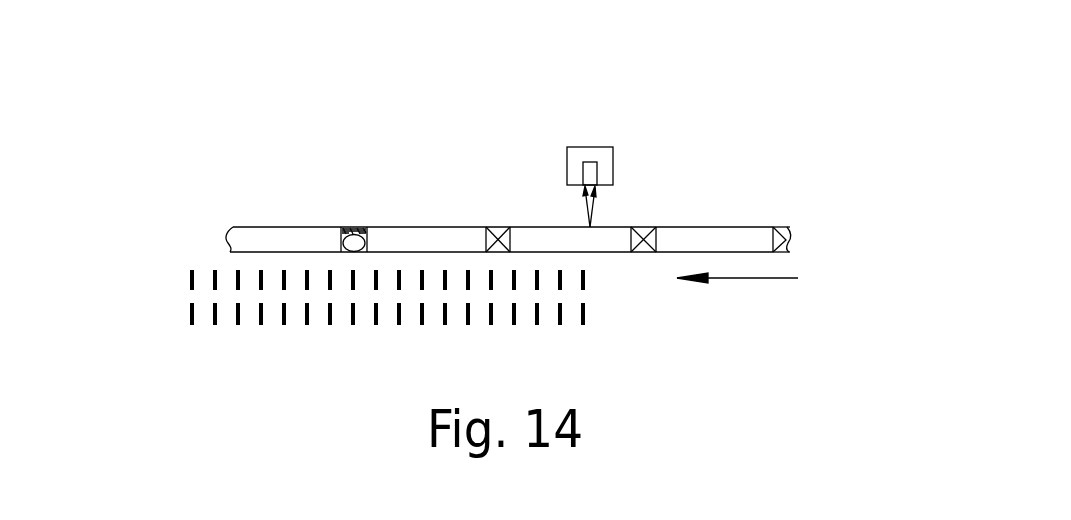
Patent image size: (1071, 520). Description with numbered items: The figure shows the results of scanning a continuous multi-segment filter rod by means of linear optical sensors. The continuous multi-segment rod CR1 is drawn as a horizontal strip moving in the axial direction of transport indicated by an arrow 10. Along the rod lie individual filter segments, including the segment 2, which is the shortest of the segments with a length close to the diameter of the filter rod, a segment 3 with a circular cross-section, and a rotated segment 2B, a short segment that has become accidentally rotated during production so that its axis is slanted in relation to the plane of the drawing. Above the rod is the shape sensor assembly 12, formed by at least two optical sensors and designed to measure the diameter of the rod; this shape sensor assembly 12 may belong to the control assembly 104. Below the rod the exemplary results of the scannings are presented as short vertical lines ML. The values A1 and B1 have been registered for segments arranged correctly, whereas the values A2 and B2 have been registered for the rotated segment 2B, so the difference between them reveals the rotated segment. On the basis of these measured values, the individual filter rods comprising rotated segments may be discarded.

The continuous multi-segment rod CR1 is at (220, 204).
The segment 3 is at (698, 235).
The rotated segment 2B is at (343, 227).
The segment 2 is at (496, 227).
The control assembly 104 is at (592, 147).
The shape sensor assembly 12 is at (586, 168).
The arrow 10 is at (798, 278).
The value A1 is at (127, 318).
The value B1 is at (145, 433).
The value A2 is at (298, 416).
The value B2 is at (312, 463).
The short vertical lines ML is at (580, 340).